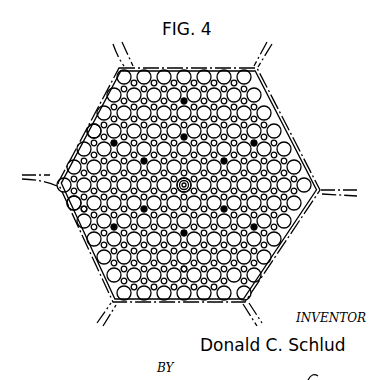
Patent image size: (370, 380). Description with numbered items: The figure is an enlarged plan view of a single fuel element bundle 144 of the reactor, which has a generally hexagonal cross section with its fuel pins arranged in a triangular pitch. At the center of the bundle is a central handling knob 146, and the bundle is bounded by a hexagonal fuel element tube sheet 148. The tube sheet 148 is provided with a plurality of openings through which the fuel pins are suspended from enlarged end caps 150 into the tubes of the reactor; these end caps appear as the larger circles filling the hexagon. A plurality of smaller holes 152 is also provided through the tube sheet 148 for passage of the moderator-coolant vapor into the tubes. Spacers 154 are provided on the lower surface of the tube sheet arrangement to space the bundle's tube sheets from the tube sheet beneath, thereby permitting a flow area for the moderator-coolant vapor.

The fuel element bundle 144 is at (293, 117).
The central handling knob 146 is at (190, 188).
The hexagonal fuel element tube sheet 148 is at (89, 133).
The enlarged end cap 150 is at (70, 200).
The smaller holes 152 is at (82, 212).
The spacers 154 is at (182, 272).